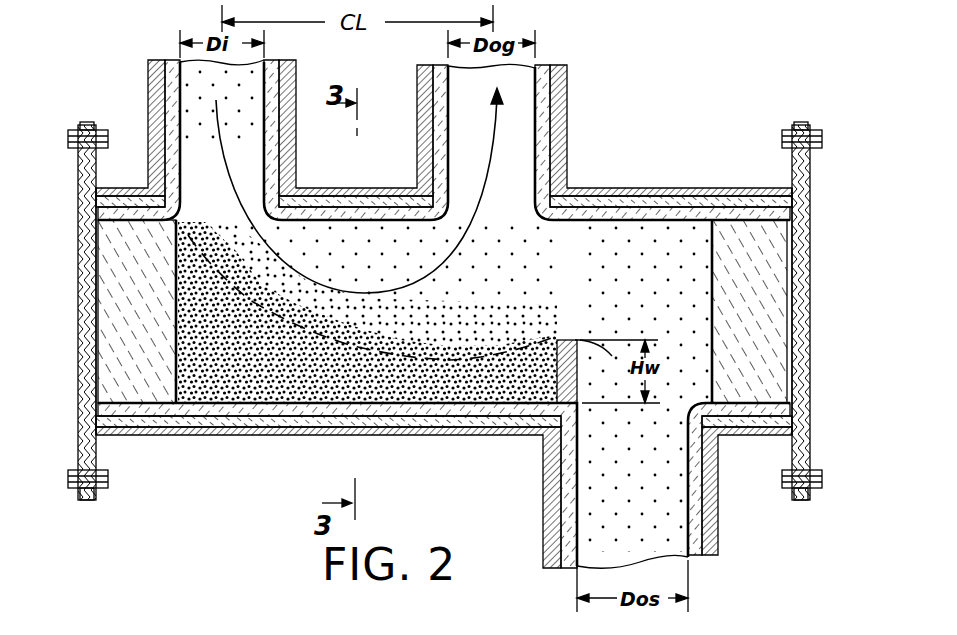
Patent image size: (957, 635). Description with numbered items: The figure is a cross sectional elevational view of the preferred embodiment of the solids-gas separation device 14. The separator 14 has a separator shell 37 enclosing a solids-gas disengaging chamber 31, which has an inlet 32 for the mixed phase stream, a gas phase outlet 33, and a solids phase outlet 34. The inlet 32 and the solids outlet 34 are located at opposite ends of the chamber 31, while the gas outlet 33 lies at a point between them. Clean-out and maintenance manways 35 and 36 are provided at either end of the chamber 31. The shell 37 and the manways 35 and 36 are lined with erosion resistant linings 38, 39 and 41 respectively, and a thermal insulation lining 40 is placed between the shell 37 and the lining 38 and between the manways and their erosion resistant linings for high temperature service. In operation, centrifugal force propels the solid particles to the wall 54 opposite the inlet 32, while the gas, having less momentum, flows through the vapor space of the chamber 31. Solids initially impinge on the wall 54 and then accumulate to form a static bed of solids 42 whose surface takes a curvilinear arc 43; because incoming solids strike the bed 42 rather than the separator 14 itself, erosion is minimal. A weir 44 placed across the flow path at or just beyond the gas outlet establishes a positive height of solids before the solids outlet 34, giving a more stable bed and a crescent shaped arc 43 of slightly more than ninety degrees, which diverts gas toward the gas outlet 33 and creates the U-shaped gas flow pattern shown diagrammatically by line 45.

The solids-gas separation device 14 is at (700, 72).
The solids-gas disengaging chamber 31 is at (375, 268).
The inlet 32 is at (197, 76).
The gas phase outlet 33 is at (508, 74).
The solids phase outlet 34 is at (650, 558).
The clean-out and maintenance manway 35 is at (78, 353).
The clean-out and maintenance manway 36 is at (808, 432).
The separator shell 37 is at (310, 188).
The erosion resistant lining 38 is at (360, 207).
The erosion resistant lining 39 is at (115, 290).
The thermal insulation lining 40 is at (92, 237).
The erosion resistant lining 41 is at (765, 283).
The static bed of solids 42 is at (372, 390).
The curvilinear arc 43 is at (452, 353).
The weir 44 is at (578, 386).
The line 45 is at (455, 255).
The wall 54 is at (300, 408).